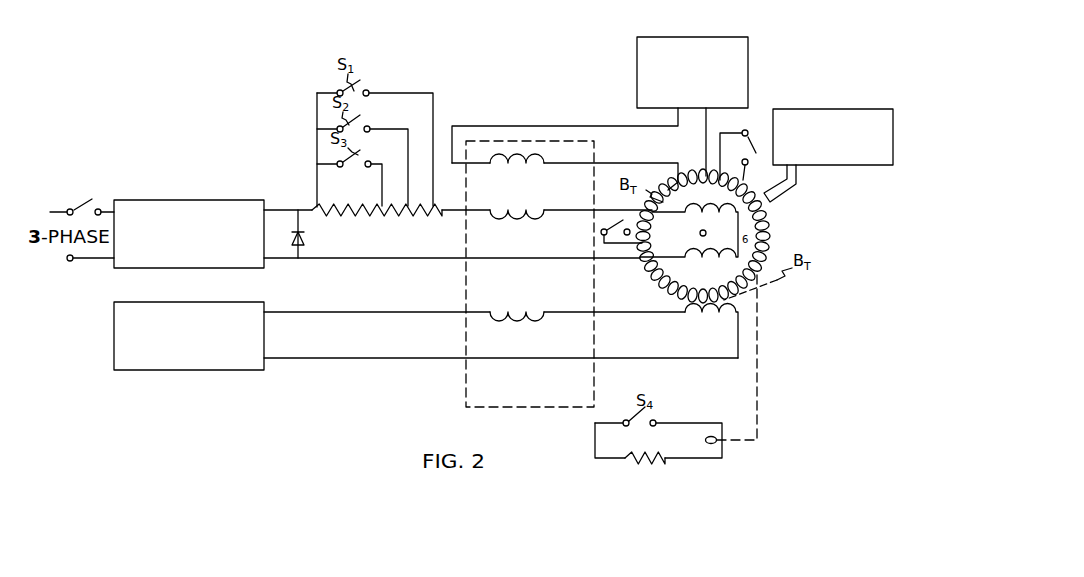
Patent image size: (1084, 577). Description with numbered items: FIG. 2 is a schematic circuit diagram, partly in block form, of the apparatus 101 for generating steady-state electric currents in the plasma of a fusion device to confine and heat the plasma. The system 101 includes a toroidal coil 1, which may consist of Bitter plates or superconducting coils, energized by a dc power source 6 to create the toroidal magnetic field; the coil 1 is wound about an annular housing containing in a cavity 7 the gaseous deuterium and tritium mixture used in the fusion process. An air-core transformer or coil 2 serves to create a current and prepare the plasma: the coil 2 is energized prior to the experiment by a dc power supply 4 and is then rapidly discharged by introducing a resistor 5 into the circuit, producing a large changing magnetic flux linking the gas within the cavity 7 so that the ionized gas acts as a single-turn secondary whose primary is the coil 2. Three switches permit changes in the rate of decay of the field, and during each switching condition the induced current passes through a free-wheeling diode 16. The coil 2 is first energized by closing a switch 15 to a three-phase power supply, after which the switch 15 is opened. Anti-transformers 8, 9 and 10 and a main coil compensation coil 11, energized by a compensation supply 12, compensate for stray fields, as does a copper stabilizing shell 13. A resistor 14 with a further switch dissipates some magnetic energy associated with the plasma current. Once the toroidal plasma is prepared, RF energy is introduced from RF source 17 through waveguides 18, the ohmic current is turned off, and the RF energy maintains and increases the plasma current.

The toroidal coil 1 is at (655, 272).
The air-core transformer or coil 2 is at (700, 200).
The dc power supply 4 is at (208, 200).
The resistor 5 is at (398, 216).
The dc power source 6 is at (748, 54).
The cavity 7 is at (710, 230).
The anti-transformer 8 is at (545, 167).
The anti-transformer 9 is at (517, 210).
The anti-transformer 10 is at (527, 307).
The main coil compensation coil 11 is at (732, 312).
The compensation supply 12 is at (192, 372).
The copper stabilizing shell 13 is at (708, 426).
The resistor 14 is at (617, 465).
The switch 15 is at (79, 198).
The free-wheeling diode 16 is at (309, 238).
The RF source 17 is at (838, 109).
The waveguides 18 is at (815, 181).
The apparatus 101 is at (551, 105).